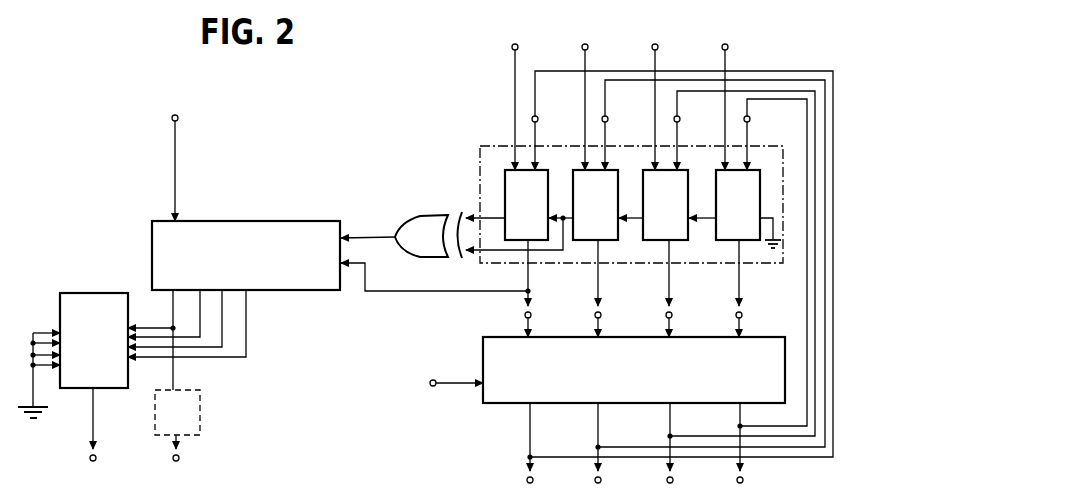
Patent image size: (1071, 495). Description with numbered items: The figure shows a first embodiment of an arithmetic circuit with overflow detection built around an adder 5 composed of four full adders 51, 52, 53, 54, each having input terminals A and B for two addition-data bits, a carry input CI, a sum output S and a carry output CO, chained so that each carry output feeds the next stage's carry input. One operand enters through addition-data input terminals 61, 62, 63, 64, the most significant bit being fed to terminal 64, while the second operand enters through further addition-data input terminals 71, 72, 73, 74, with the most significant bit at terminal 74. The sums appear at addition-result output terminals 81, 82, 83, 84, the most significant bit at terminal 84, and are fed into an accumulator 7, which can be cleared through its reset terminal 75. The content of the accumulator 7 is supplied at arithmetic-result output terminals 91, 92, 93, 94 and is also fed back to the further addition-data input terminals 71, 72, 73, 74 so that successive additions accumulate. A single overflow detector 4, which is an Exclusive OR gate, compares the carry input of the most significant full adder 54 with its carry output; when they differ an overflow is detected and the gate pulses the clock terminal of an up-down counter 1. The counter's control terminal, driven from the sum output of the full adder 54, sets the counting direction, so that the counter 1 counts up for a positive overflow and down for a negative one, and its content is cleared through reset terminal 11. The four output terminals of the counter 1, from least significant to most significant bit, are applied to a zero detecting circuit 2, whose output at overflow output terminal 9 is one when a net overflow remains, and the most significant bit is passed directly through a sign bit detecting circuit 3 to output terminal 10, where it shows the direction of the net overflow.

The up-down counter 1 is at (237, 221).
The zero detecting circuit 2 is at (90, 293).
The sign bit detecting circuit 3 is at (200, 418).
The single overflow detector 4 is at (427, 214).
The adder 5 is at (770, 265).
The accumulator 7 is at (486, 408).
The overflow output terminal 9 is at (96, 460).
The output terminal 10 is at (179, 460).
The reset terminal 11 is at (178, 118).
The full adder 51 is at (761, 169).
The full adder 52 is at (689, 169).
The full adder 53 is at (619, 169).
The full adder 54 is at (549, 169).
The addition-data input terminal 61 is at (728, 45).
The addition-data input terminal 62 is at (658, 45).
The addition-data input terminal 63 is at (588, 45).
The addition-data input terminal 64 is at (518, 45).
The further addition-data input terminal 71 is at (750, 119).
The further addition-data input terminal 72 is at (680, 119).
The further addition-data input terminal 73 is at (608, 119).
The further addition-data input terminal 74 is at (538, 119).
The reset terminal 75 is at (433, 387).
The addition-result output terminal 81 is at (742, 317).
The addition-result output terminal 82 is at (672, 313).
The addition-result output terminal 83 is at (601, 313).
The addition-result output terminal 84 is at (531, 313).
The arithmetic-result output terminal 91 is at (743, 481).
The arithmetic-result output terminal 92 is at (673, 481).
The arithmetic-result output terminal 93 is at (601, 481).
The arithmetic-result output terminal 94 is at (533, 481).